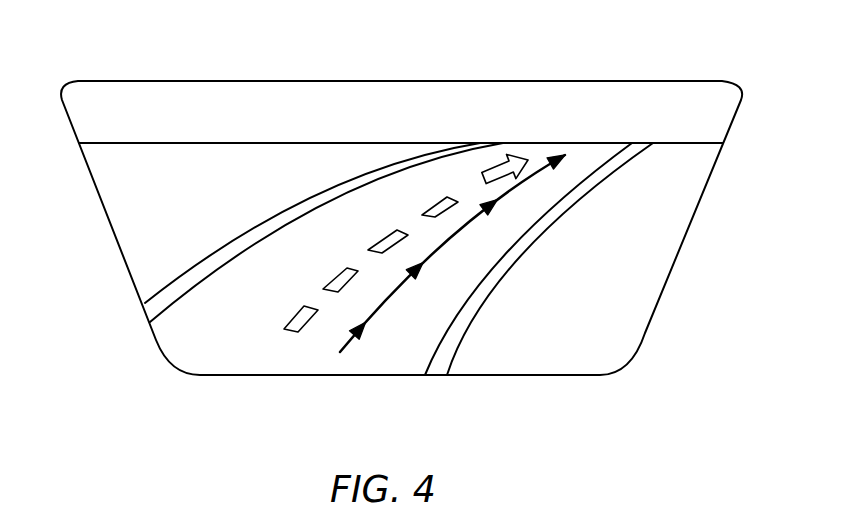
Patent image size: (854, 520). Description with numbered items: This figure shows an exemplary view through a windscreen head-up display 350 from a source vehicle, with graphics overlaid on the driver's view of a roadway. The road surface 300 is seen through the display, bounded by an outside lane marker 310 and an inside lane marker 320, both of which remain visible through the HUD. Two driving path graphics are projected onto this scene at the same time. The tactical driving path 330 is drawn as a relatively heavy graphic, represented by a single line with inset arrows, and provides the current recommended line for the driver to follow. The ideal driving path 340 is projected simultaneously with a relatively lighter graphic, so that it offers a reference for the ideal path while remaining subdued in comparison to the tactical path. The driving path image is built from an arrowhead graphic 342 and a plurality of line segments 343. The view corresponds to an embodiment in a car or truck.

The display screen 350 is at (136, 60).
The road surface 300 is at (268, 287).
The outside lane marker 310 is at (273, 213).
The inside lane marker 320 is at (497, 287).
The tactical driving path 330 is at (468, 220).
The ideal driving path 340 is at (443, 197).
The arrowhead graphic 342 is at (513, 160).
The line segments 343 is at (440, 217).